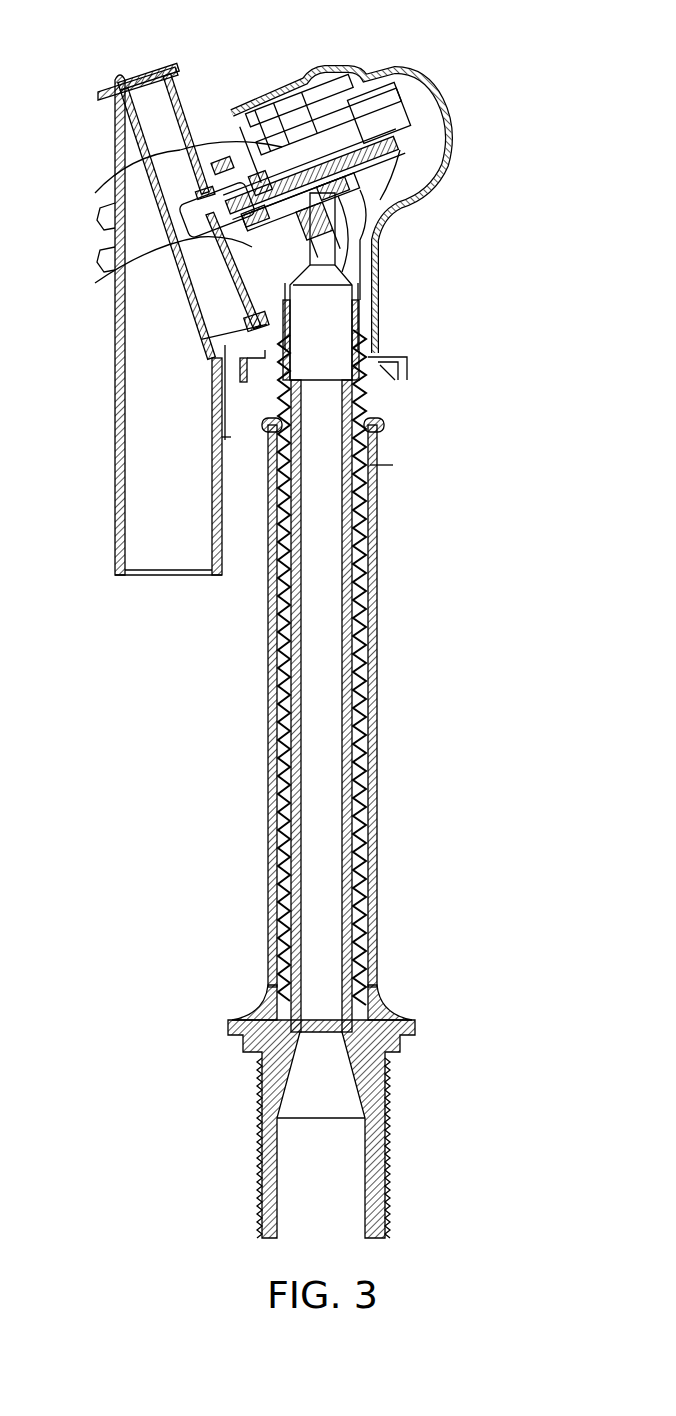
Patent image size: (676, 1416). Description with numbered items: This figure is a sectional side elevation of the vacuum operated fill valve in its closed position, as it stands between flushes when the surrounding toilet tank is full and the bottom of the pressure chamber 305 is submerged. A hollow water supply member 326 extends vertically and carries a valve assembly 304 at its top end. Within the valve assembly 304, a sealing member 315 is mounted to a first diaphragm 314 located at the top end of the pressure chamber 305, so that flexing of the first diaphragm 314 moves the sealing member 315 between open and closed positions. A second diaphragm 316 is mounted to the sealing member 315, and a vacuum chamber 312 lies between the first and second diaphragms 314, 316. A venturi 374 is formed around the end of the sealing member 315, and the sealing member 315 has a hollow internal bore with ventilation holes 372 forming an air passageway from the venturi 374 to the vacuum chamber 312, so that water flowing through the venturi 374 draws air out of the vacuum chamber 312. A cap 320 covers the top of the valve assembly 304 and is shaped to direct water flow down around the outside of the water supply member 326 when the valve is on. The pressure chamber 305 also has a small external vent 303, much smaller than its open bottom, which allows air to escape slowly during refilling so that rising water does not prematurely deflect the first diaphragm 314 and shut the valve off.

The external vent 303 is at (114, 160).
The valve assembly 304 is at (450, 70).
The pressure chamber 305 is at (140, 530).
The vacuum chamber 312 is at (233, 158).
The first diaphragm 314 is at (185, 150).
The sealing member 315 is at (305, 100).
The second diaphragm 316 is at (372, 268).
The cap 320 is at (386, 70).
The water supply member 326 is at (385, 742).
The ventilation holes 372 is at (200, 262).
The venturi 374 is at (400, 146).